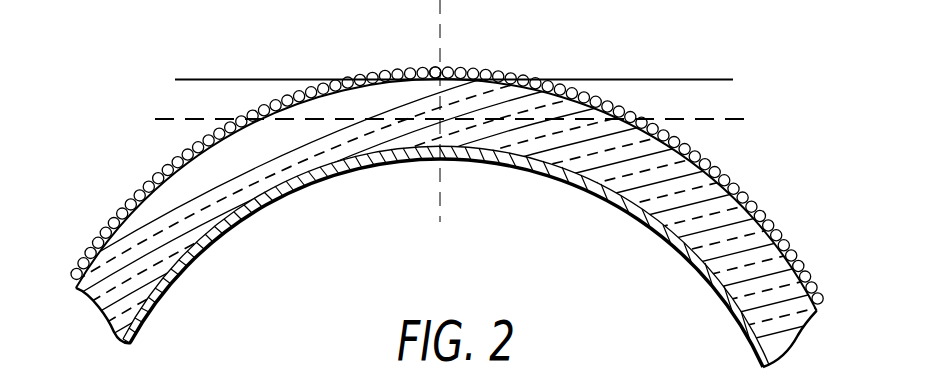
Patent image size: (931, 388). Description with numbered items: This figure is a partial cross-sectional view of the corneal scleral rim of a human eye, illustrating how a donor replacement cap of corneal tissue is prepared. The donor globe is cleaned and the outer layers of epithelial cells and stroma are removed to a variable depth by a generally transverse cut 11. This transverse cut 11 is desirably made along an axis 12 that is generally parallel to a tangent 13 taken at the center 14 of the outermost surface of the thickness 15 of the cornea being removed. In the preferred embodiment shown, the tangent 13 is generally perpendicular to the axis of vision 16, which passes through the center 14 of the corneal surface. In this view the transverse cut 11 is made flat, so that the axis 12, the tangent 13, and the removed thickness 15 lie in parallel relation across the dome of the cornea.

The lens body 11 is at (590, 116).
The reference plane (dashed line) 12 is at (738, 118).
The tangent plane line 13 is at (610, 78).
The apex of lens 14 is at (443, 78).
The bead layer 15 is at (390, 100).
The optical axis center line 16 is at (438, 201).